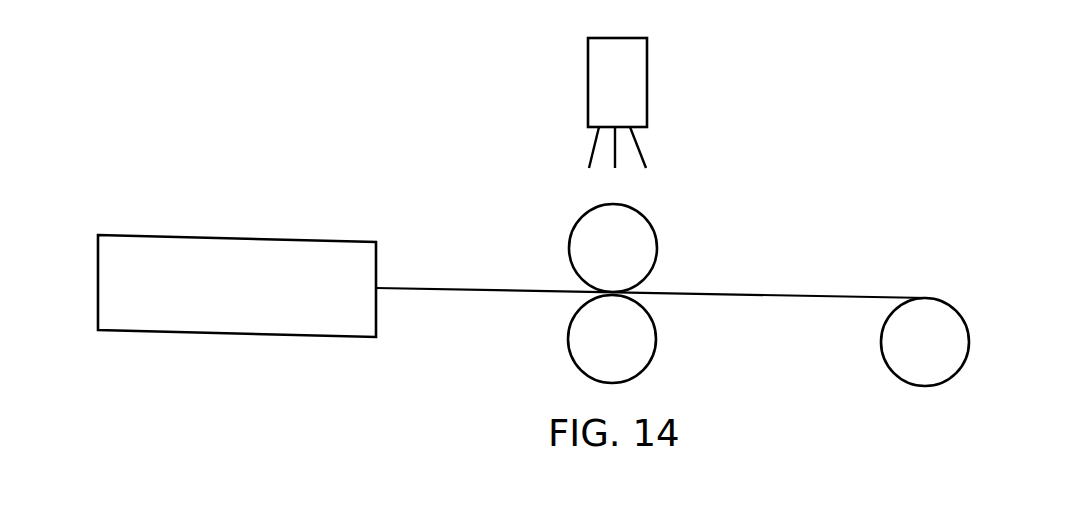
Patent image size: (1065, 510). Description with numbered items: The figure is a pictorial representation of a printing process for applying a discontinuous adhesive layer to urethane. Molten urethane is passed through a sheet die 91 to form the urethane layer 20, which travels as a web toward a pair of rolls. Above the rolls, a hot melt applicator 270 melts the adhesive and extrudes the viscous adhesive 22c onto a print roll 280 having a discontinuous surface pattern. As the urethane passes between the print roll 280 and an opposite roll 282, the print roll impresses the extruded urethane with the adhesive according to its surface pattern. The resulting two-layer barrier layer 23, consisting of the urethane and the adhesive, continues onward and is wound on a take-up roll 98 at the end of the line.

The sheet die 91 is at (299, 338).
The urethane layer 20 is at (431, 291).
The barrier layer 23 is at (851, 280).
The print roll 280 is at (613, 248).
The opposite roll 282 is at (612, 339).
The viscous adhesive 22c is at (647, 216).
The hot melt applicator 270 is at (648, 88).
The take-up roll 98 is at (969, 344).